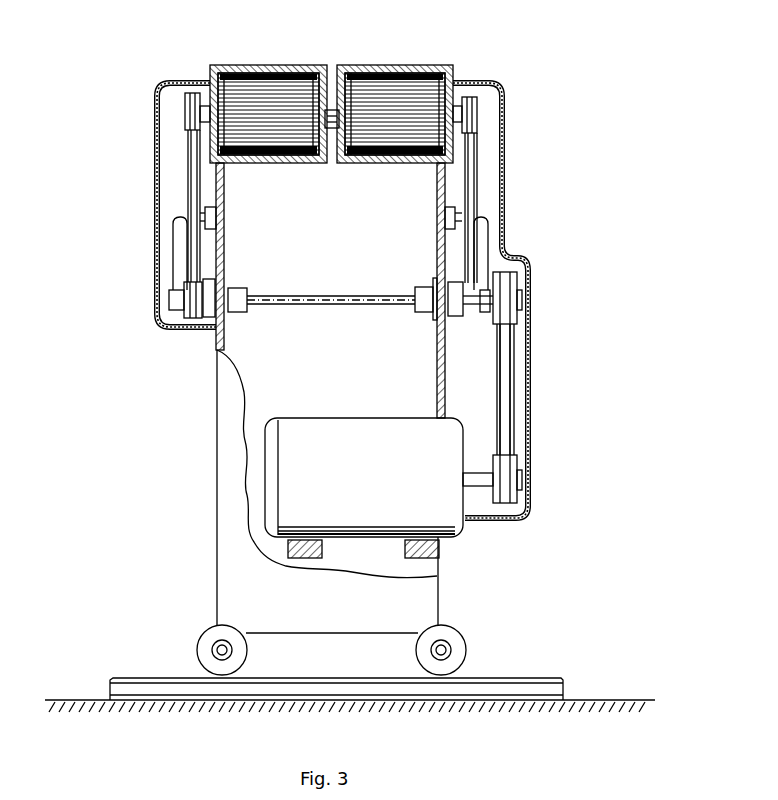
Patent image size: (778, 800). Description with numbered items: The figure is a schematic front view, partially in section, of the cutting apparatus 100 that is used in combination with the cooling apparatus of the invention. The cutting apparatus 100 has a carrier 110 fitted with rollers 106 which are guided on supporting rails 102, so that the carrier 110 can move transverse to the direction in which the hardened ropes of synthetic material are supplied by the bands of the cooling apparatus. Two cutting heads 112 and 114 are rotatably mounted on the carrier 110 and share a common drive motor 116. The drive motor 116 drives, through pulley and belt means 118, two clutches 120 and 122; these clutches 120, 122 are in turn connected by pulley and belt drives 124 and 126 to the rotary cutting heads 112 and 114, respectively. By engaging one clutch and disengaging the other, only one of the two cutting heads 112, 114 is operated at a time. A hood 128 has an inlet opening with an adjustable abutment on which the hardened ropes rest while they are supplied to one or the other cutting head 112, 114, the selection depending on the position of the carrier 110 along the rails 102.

The cutting apparatus 100 is at (530, 135).
The supporting rails 102 is at (497, 690).
The rollers 106 is at (208, 634).
The carrier 110 is at (215, 472).
The cutting head 112 is at (266, 75).
The cutting head 114 is at (397, 75).
The drive motor 116 is at (350, 432).
The pulley and belt means 118 is at (500, 377).
The clutch 120 is at (452, 286).
The clutch 122 is at (212, 283).
The pulley and belt drive 124 is at (470, 190).
The pulley and belt drive 126 is at (192, 186).
The hood 128 is at (345, 68).